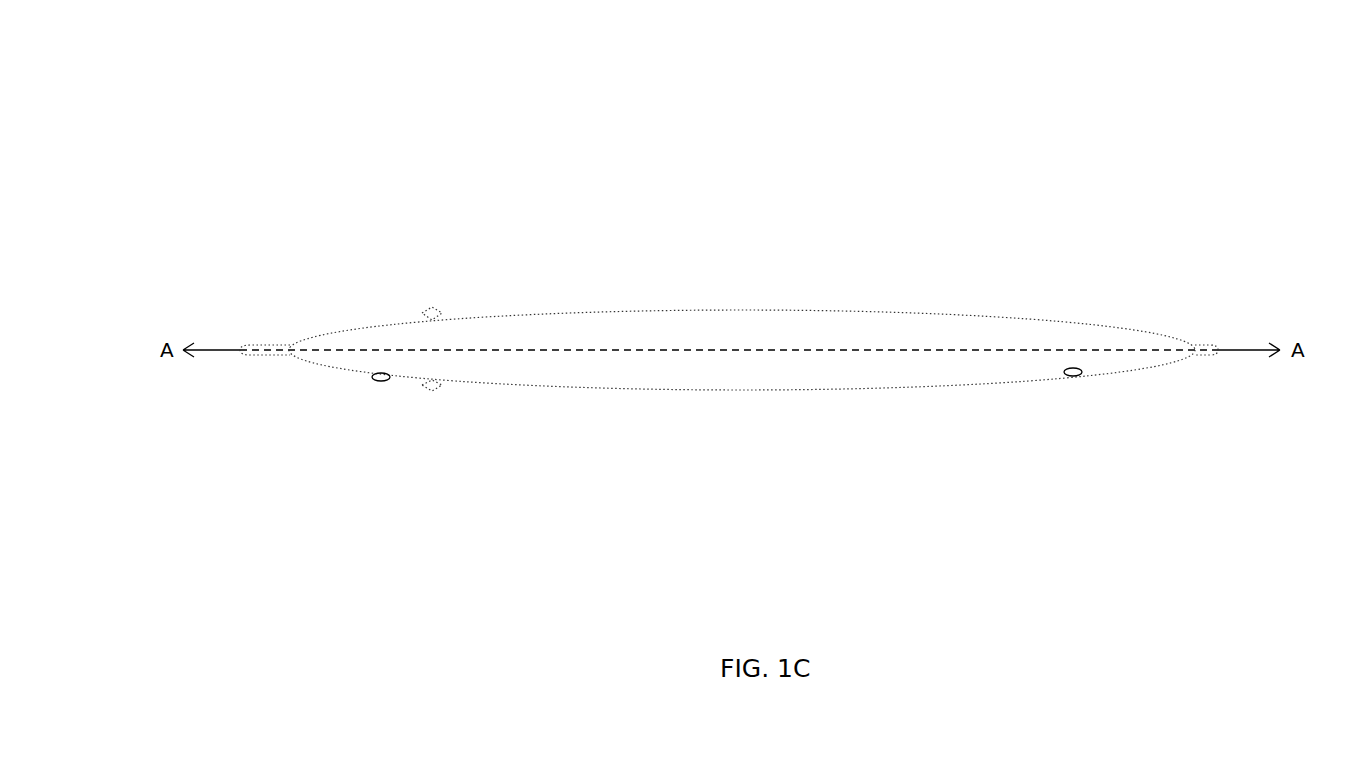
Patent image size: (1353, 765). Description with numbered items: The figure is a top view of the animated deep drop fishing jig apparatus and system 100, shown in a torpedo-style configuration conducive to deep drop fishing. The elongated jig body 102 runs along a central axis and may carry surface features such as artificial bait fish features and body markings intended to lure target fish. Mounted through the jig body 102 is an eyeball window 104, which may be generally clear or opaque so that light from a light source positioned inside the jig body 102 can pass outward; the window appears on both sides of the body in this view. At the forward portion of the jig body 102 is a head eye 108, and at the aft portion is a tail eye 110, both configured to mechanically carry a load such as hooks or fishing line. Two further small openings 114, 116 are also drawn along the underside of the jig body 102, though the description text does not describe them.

The animated deep drop fishing jig apparatus and system 100 is at (296, 100).
The jig body 102 is at (641, 310).
The through-mounted eyeball window 104 is at (432, 307).
The head eye 108 is at (262, 345).
The tail eye 110 is at (1213, 345).
The forward port 114 is at (383, 381).
The aft port 116 is at (1072, 376).